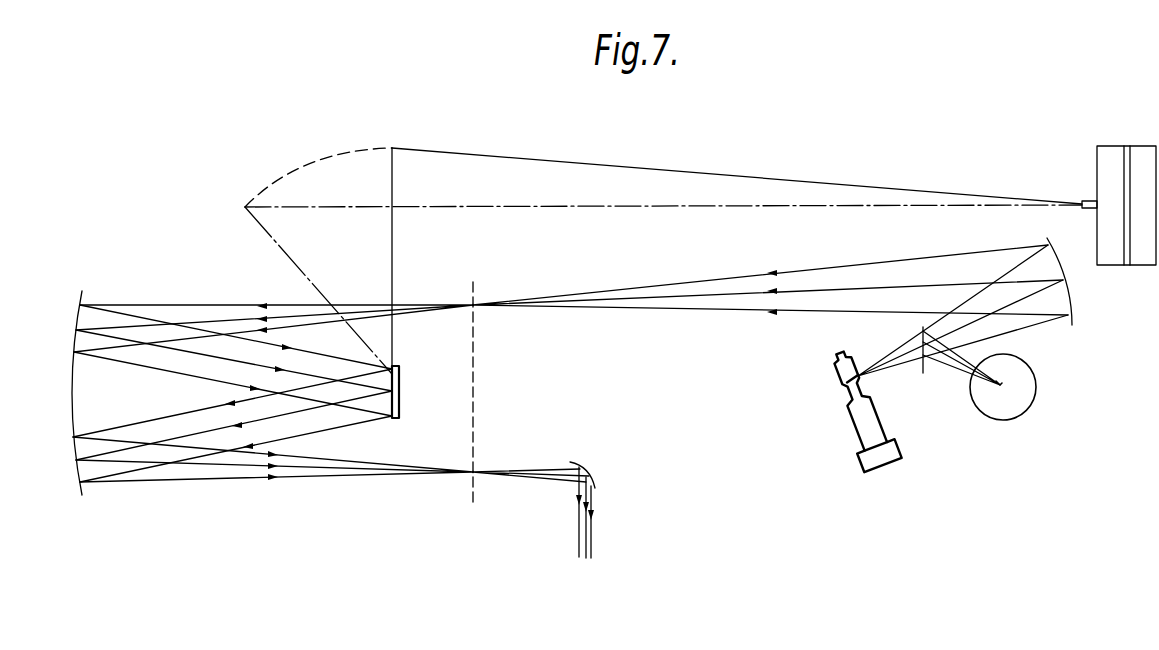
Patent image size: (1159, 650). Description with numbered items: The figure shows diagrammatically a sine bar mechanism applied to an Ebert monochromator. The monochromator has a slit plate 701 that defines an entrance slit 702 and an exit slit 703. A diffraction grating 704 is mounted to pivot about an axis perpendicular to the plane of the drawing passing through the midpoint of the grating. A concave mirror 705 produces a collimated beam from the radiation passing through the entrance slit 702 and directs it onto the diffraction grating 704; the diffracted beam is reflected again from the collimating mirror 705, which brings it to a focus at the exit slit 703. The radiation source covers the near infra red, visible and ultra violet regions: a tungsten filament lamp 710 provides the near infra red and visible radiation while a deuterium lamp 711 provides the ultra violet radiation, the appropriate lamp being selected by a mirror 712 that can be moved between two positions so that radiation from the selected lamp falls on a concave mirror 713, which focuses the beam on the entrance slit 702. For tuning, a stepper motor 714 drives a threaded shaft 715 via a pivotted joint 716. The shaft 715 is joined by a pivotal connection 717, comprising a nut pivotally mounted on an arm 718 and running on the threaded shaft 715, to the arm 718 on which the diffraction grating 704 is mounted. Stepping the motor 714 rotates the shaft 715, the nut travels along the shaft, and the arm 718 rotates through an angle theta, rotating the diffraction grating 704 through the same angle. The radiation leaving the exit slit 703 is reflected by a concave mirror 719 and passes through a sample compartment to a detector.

The slit plate 701 is at (475, 385).
The entrance slit 702 is at (475, 302).
The exit slit 703 is at (478, 463).
The diffraction grating 704 is at (400, 404).
The concave mirror 705 is at (86, 492).
The tungsten filament lamp 710 is at (845, 388).
The deuterium lamp 711 is at (993, 408).
The mirror 712 is at (923, 375).
The concave mirror 713 is at (1073, 298).
The stepper motor 714 is at (1113, 152).
The threaded shaft 715 is at (795, 180).
The pivotted joint 716 is at (1088, 199).
The pivotal connection 717 is at (392, 148).
The arm 718 is at (392, 248).
The concave mirror 719 is at (585, 473).